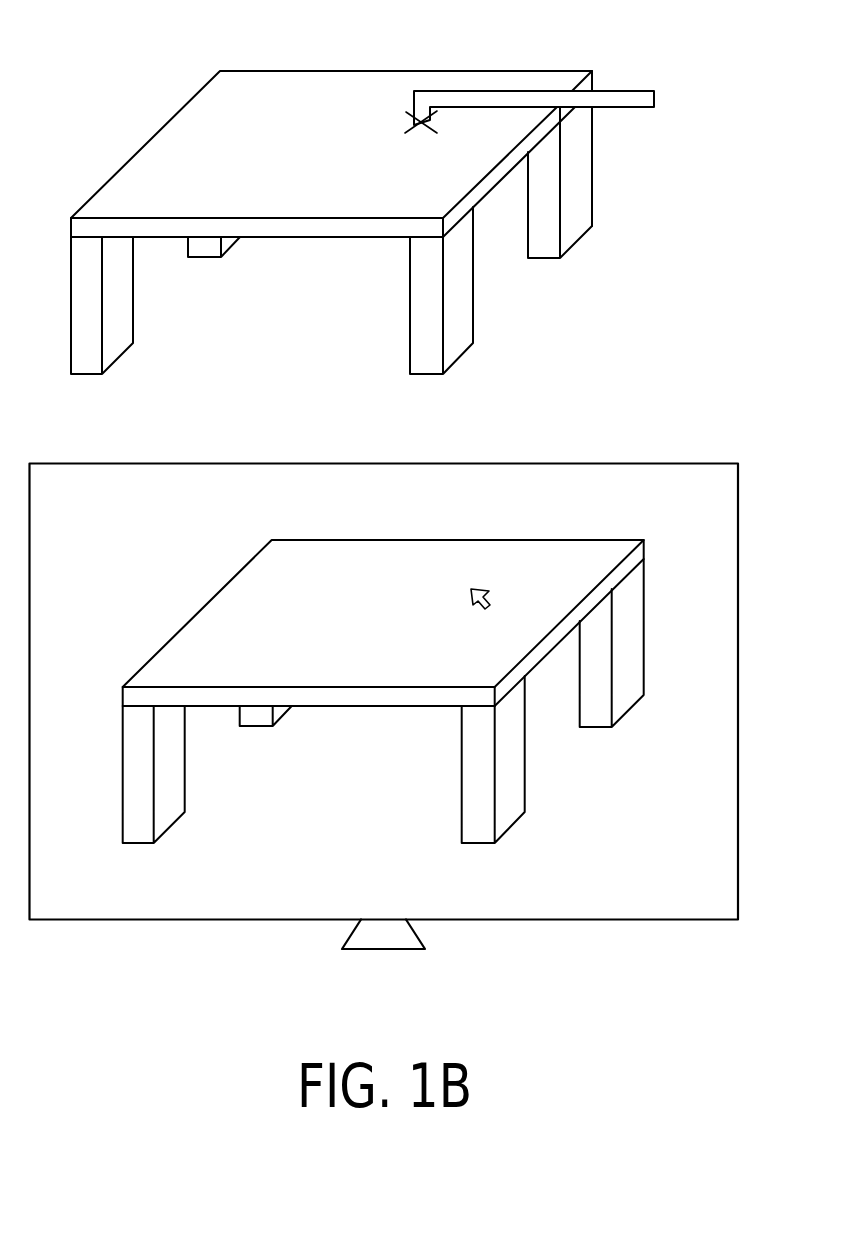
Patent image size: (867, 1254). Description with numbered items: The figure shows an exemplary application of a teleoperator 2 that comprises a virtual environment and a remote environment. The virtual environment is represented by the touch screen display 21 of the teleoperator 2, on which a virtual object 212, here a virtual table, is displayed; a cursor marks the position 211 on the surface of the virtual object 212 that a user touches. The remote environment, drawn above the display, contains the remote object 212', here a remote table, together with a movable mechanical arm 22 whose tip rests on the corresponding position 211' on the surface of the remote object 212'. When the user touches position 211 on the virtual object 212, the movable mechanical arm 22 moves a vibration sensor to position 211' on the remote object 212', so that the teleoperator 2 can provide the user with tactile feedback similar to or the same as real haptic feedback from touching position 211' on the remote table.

The teleoperator 2 is at (769, 240).
The touch screen display 21 is at (673, 462).
The movable mechanical arm 22 is at (486, 90).
The position 211 is at (463, 542).
The virtual object 212 is at (383, 691).
The position 211' is at (392, 119).
The remote object 212' is at (331, 222).